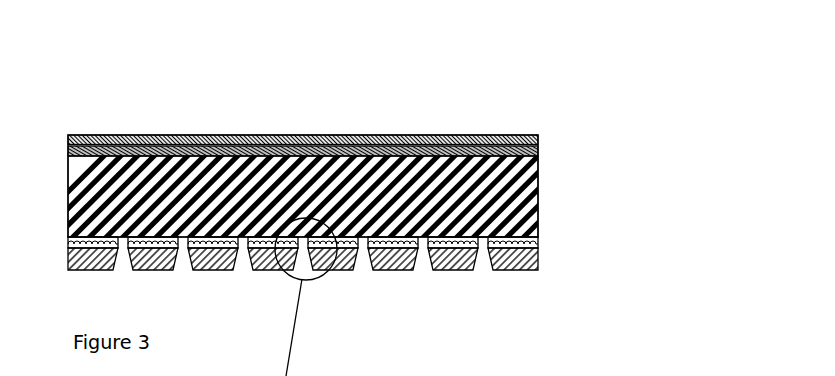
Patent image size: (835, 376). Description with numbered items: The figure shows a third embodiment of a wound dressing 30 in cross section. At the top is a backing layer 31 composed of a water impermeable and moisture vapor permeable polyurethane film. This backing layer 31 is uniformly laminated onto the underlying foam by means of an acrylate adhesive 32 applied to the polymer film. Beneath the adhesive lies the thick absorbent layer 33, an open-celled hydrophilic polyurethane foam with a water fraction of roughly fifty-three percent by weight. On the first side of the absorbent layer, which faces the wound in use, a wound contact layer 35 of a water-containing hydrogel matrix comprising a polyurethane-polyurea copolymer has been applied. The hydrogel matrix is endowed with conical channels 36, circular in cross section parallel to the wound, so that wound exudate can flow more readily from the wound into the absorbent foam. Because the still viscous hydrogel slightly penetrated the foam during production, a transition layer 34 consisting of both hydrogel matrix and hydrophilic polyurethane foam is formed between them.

The wound dressing 30 is at (109, 122).
The backing layer 31 is at (550, 139).
The acrylate adhesive 32 is at (550, 152).
The absorbent layer 33 is at (550, 202).
The transition layer 34 is at (550, 242).
The wound contact layer 35 is at (550, 257).
The conical channels 36 is at (483, 278).